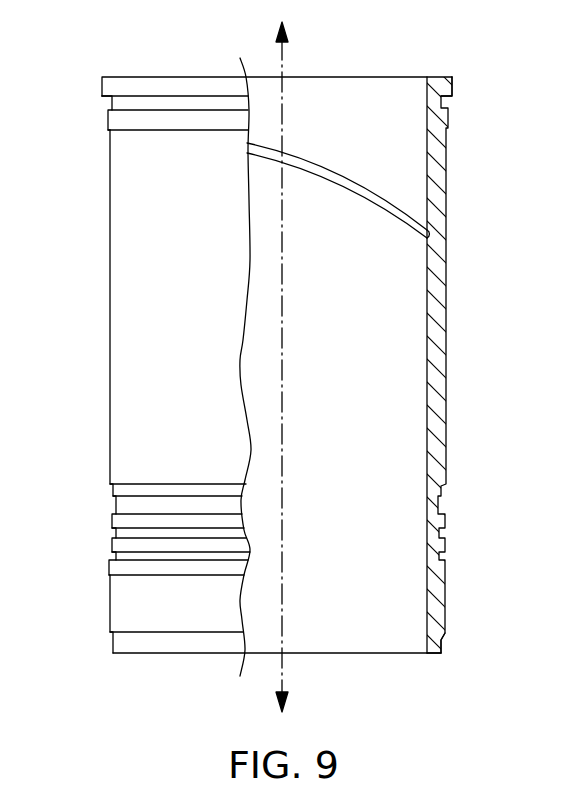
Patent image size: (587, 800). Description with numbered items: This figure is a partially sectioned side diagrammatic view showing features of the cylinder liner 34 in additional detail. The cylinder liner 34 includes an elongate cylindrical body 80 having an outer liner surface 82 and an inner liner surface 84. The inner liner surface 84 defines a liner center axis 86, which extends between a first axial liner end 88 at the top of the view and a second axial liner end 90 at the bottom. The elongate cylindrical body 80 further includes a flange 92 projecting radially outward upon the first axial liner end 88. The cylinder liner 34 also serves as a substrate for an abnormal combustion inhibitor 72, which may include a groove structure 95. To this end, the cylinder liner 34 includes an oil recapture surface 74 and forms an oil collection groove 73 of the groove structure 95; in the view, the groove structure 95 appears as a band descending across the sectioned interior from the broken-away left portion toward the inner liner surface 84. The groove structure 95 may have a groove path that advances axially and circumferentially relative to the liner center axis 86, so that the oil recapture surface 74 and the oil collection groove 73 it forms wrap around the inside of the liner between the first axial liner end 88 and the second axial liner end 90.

The cylinder liner 34 is at (478, 107).
The abnormal combustion inhibitor 72 is at (338, 203).
The oil collection groove 73 is at (328, 170).
The oil recapture surface 74 is at (334, 186).
The elongate cylindrical body 80 is at (108, 383).
The outer liner surface 82 is at (120, 308).
The inner liner surface 84 is at (420, 352).
The liner center axis 86 is at (285, 668).
The first axial liner end 88 is at (92, 82).
The second axial liner end 90 is at (447, 659).
The flange 92 is at (454, 76).
The groove structure 95 is at (376, 218).